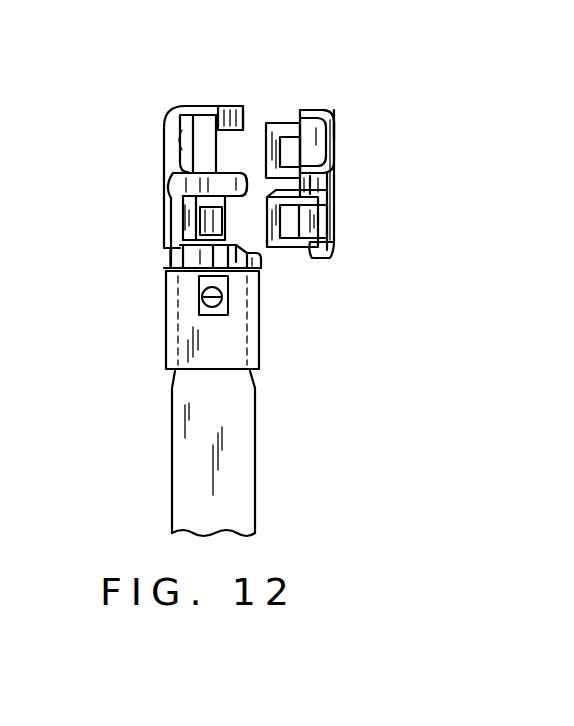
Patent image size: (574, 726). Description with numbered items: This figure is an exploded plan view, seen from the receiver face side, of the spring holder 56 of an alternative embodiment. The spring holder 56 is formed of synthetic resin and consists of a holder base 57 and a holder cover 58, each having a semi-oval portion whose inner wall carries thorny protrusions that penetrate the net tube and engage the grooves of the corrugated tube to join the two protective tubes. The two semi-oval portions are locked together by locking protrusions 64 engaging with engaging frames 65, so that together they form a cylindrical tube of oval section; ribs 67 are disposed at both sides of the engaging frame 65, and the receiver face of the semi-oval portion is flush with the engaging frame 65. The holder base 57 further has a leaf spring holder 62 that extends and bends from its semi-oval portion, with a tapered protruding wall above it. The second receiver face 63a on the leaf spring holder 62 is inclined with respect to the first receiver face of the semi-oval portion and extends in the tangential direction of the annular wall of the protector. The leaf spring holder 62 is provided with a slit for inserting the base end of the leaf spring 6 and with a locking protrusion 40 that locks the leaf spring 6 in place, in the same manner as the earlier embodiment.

The leaf spring 6 is at (257, 440).
The locking protrusion 40 is at (199, 310).
The spring holder 56 is at (150, 210).
The holder base 57 is at (164, 191).
The holder cover 58 is at (340, 173).
The leaf spring holder 62 is at (260, 310).
The second receiver face 63a is at (217, 340).
The locking protrusion 64 is at (200, 222).
The engaging frame 65 is at (275, 247).
The ribs 67 is at (236, 172).